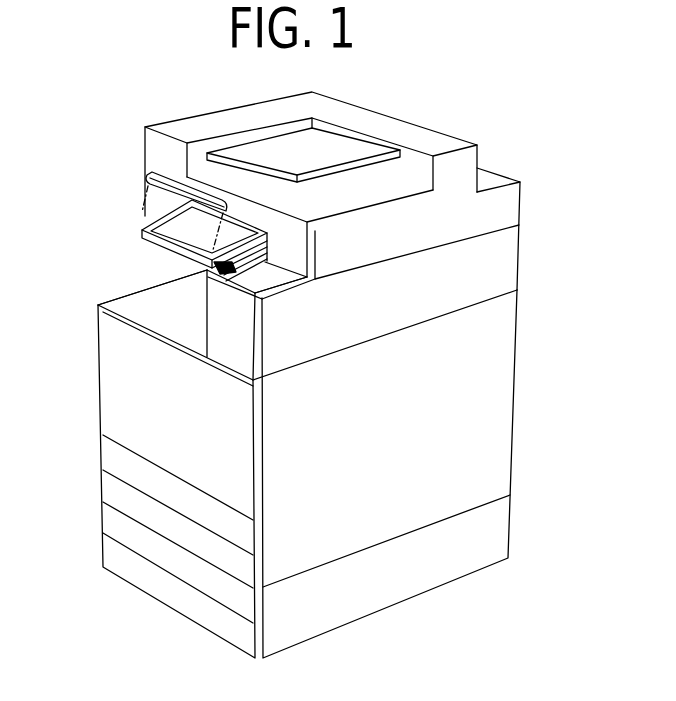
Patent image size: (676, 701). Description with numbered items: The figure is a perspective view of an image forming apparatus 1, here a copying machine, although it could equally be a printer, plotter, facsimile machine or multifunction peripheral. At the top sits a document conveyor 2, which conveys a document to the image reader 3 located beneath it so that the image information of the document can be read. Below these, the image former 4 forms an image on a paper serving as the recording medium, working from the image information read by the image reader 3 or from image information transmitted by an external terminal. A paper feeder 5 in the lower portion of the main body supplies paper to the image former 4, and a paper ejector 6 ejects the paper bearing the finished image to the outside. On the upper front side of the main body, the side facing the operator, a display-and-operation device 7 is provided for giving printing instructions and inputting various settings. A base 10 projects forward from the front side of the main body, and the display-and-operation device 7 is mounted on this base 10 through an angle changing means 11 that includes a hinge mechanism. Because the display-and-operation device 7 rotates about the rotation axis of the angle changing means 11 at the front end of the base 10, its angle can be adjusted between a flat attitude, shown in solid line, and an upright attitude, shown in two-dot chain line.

The image forming apparatus 1 is at (103, 118).
The document conveyor 2 is at (403, 133).
The image reader 3 is at (443, 222).
The image former 4 is at (182, 401).
The paper feeder 5 is at (178, 591).
The paper ejector 6 is at (178, 309).
The display-and-operation device 7 is at (187, 222).
The base 10 is at (265, 263).
The angle changing means 11 is at (250, 297).